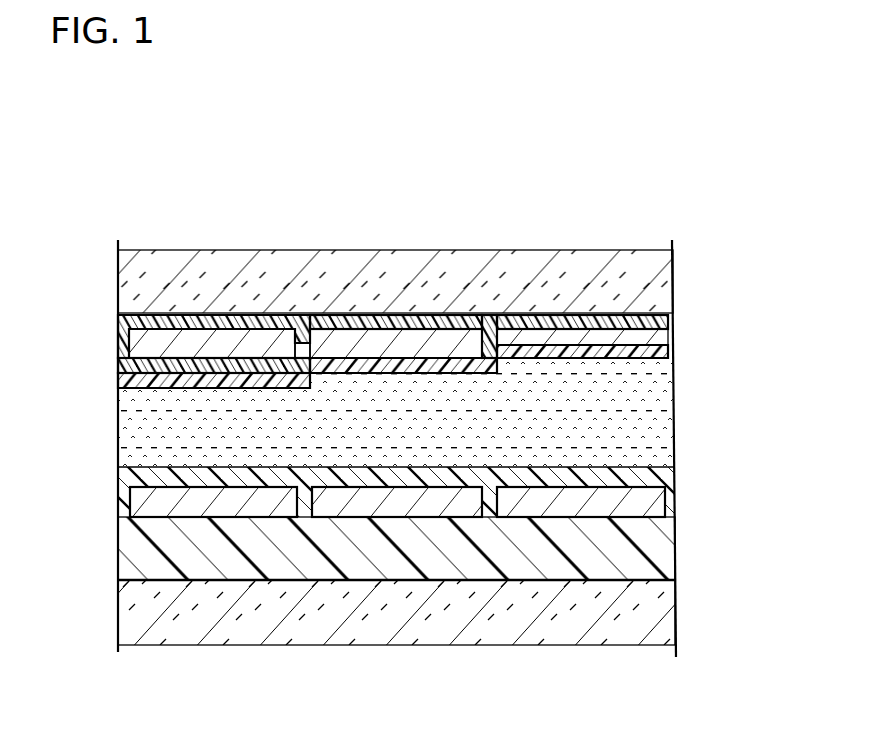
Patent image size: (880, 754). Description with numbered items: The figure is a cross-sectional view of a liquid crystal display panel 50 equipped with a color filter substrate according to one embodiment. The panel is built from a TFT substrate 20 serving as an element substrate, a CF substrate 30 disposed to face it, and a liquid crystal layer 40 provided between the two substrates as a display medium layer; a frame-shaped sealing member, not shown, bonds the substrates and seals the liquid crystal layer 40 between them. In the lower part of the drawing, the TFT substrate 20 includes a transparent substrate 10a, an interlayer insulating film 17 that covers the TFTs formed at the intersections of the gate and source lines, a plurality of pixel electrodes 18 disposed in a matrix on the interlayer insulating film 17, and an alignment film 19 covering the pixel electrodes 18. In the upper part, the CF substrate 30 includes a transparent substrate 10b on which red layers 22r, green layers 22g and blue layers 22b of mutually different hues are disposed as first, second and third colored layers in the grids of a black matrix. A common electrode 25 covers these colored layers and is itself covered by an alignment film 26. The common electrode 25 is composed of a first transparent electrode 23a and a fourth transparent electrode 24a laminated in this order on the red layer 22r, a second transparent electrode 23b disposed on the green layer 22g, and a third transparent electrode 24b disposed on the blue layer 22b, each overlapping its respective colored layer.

The liquid crystal display panel 50 is at (125, 176).
The common electrode 25 is at (200, 180).
The red layer 22r is at (148, 317).
The first transparent electrode 23a is at (215, 340).
The fourth transparent electrode 24a is at (281, 363).
The second transparent electrode 23b is at (397, 340).
The third transparent electrode 24b is at (486, 340).
The blue layer 22b is at (558, 315).
The green layer 22g is at (452, 327).
The transparent substrate 10b is at (663, 292).
The alignment film 26 is at (663, 347).
The CF substrate 30 is at (108, 250).
The liquid crystal layer 40 is at (108, 392).
The TFT substrate 20 is at (108, 473).
The alignment film 19 is at (675, 477).
The pixel electrode 18 is at (658, 503).
The interlayer insulating film 17 is at (672, 543).
The transparent substrate 10a is at (668, 618).